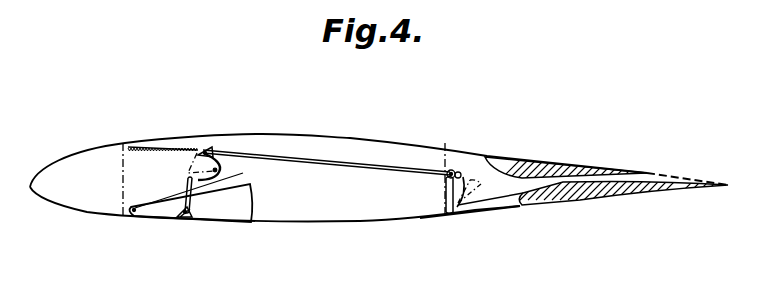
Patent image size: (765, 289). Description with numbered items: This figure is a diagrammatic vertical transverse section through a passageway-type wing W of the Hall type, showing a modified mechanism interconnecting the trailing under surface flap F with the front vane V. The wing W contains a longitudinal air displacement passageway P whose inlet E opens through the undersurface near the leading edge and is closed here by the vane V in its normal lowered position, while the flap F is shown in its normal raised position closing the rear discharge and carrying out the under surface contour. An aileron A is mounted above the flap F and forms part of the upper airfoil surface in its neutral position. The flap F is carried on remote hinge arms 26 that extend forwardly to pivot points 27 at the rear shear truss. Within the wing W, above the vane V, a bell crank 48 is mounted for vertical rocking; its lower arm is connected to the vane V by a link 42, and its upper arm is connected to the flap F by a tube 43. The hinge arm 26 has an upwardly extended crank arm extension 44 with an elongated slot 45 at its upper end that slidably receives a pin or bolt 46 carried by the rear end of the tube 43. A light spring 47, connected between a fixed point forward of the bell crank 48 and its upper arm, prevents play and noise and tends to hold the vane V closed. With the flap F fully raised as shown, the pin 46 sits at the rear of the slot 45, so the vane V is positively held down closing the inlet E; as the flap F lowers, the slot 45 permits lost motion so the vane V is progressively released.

The remote hinge arm 26 is at (497, 207).
The hinge or pivot point 27 is at (457, 210).
The link 42 is at (197, 187).
The tube 43 is at (367, 163).
The crank arm extension 44 is at (465, 177).
The elongated slot 45 is at (447, 171).
The pin or bolt 46 is at (457, 171).
The spring 47 is at (160, 145).
The bell crank 48 is at (213, 148).
The wing W is at (348, 137).
The passageway P is at (316, 192).
The aileron A is at (590, 163).
The flap F is at (590, 205).
The passageway inlet E is at (172, 217).
The front vane V is at (205, 220).